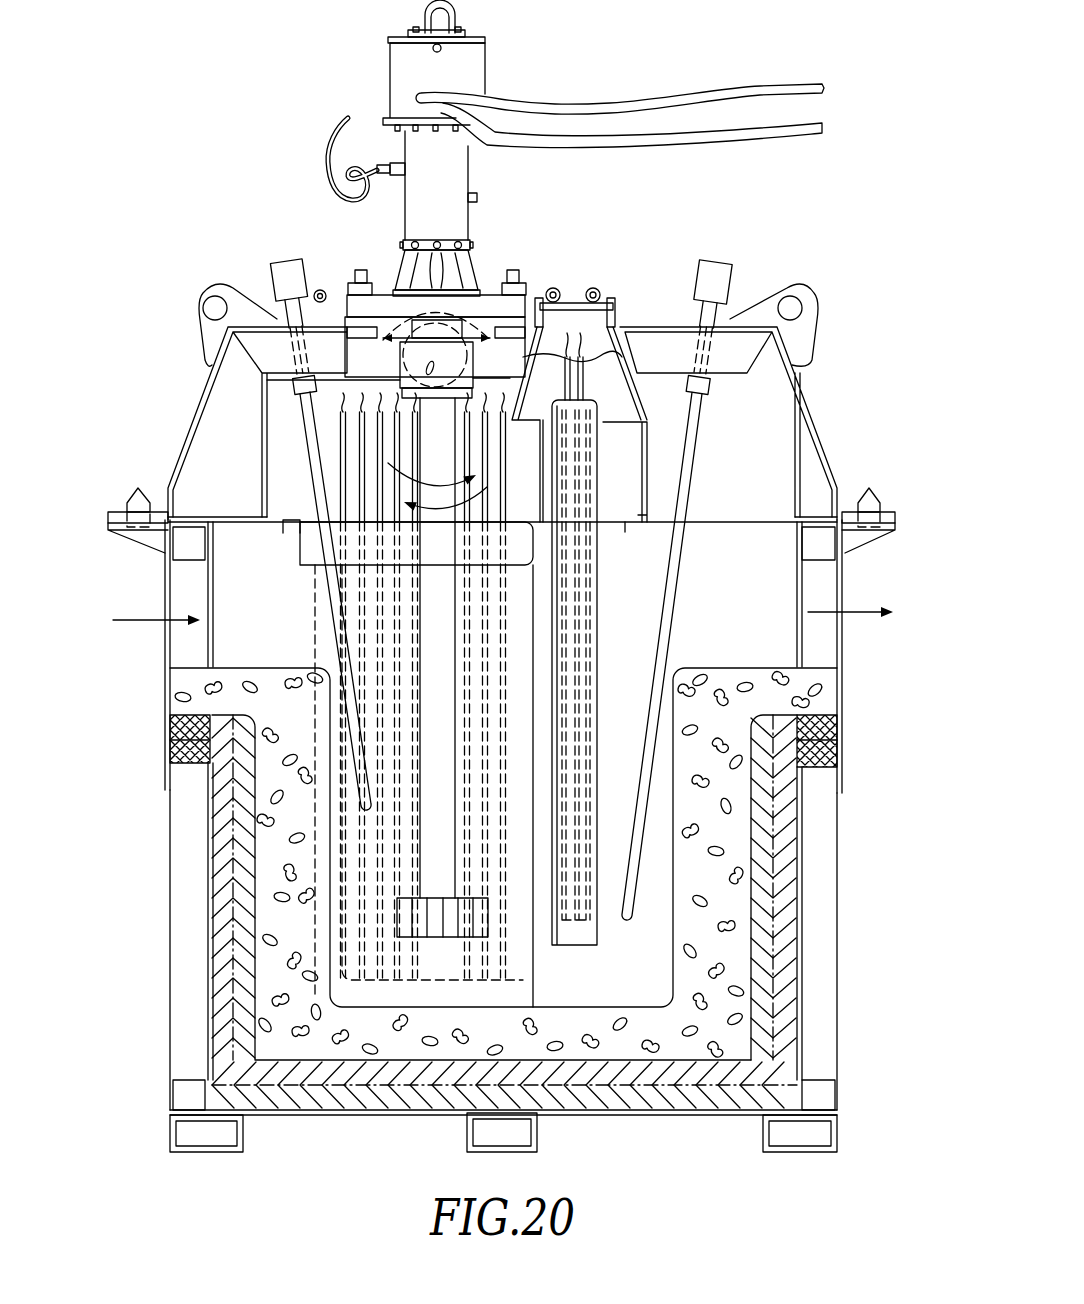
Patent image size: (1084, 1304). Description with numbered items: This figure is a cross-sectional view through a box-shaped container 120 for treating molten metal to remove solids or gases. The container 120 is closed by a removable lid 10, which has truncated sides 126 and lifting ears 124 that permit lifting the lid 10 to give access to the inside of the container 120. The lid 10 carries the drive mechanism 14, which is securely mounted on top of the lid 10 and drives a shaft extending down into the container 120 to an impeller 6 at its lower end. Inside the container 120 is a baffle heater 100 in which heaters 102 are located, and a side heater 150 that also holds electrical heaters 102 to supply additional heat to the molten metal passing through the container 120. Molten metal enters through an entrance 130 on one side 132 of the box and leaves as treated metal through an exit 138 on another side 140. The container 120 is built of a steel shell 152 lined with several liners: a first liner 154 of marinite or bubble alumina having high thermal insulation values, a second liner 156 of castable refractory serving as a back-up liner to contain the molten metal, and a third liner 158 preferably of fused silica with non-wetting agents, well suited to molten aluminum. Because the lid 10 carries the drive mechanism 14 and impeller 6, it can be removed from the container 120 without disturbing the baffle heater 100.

The removable lid 10 is at (643, 327).
The drive mechanism 14 is at (470, 60).
The box-shaped structure 120 is at (347, 120).
The lifting ears 124 is at (210, 280).
The truncated sides 126 is at (195, 422).
The heaters 102 is at (597, 345).
The baffle heater 100 is at (585, 597).
The side heater 150 is at (313, 597).
The impeller 6 is at (485, 922).
The molten metal entrance 130 is at (185, 580).
The side 132 is at (180, 807).
The exit 138 is at (807, 587).
The side 140 is at (820, 817).
The steel shell 152 is at (168, 740).
The first liner 154 is at (218, 892).
The second liner 156 is at (233, 845).
The third liner 158 is at (730, 873).